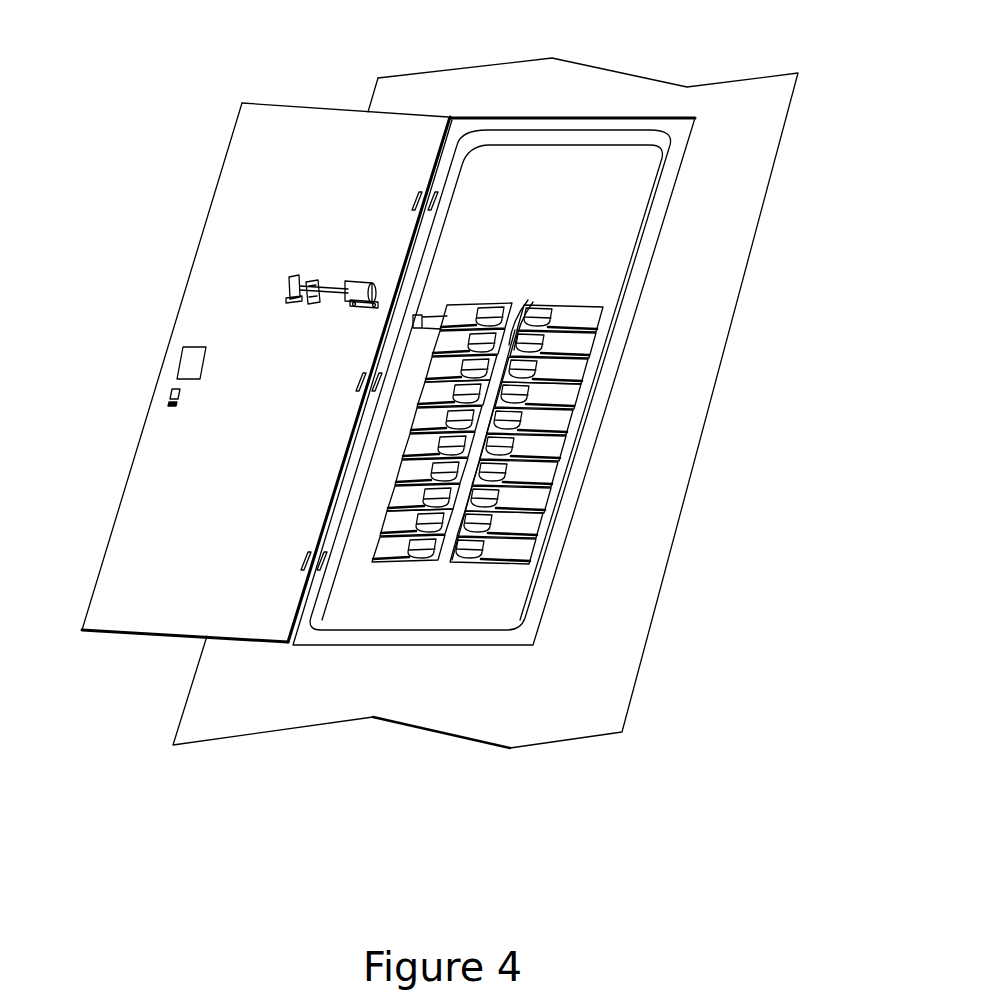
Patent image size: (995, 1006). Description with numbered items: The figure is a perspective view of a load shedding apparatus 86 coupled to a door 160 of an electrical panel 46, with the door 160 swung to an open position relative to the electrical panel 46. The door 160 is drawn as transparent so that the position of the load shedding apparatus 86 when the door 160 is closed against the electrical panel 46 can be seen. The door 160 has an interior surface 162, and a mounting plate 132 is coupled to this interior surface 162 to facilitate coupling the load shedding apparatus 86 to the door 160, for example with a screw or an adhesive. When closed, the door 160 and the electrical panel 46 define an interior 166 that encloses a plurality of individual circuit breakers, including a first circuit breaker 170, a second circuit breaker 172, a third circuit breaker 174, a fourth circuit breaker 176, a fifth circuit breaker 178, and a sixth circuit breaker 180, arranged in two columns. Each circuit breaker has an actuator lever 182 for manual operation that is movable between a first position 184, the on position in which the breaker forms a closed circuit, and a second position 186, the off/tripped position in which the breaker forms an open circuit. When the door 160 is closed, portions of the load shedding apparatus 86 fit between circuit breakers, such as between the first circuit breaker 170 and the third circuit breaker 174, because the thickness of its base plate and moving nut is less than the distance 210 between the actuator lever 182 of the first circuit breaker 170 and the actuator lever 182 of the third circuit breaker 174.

The electrical panel 46 is at (646, 98).
The door 160 is at (266, 347).
The interior surface 162 is at (239, 178).
The load shedding apparatus 86 is at (251, 277).
The mounting plate 132 is at (362, 307).
The distance 210 is at (398, 318).
The interior 166 is at (628, 213).
The first circuit breaker 170 is at (475, 259).
The third circuit breaker 174 is at (442, 331).
The fifth circuit breaker 178 is at (430, 375).
The second circuit breaker 172 is at (597, 275).
The fourth circuit breaker 176 is at (591, 348).
The sixth circuit breaker 180 is at (583, 375).
The first position 184 is at (481, 286).
The second position 186 is at (510, 285).
The actuator lever 182 is at (524, 282).